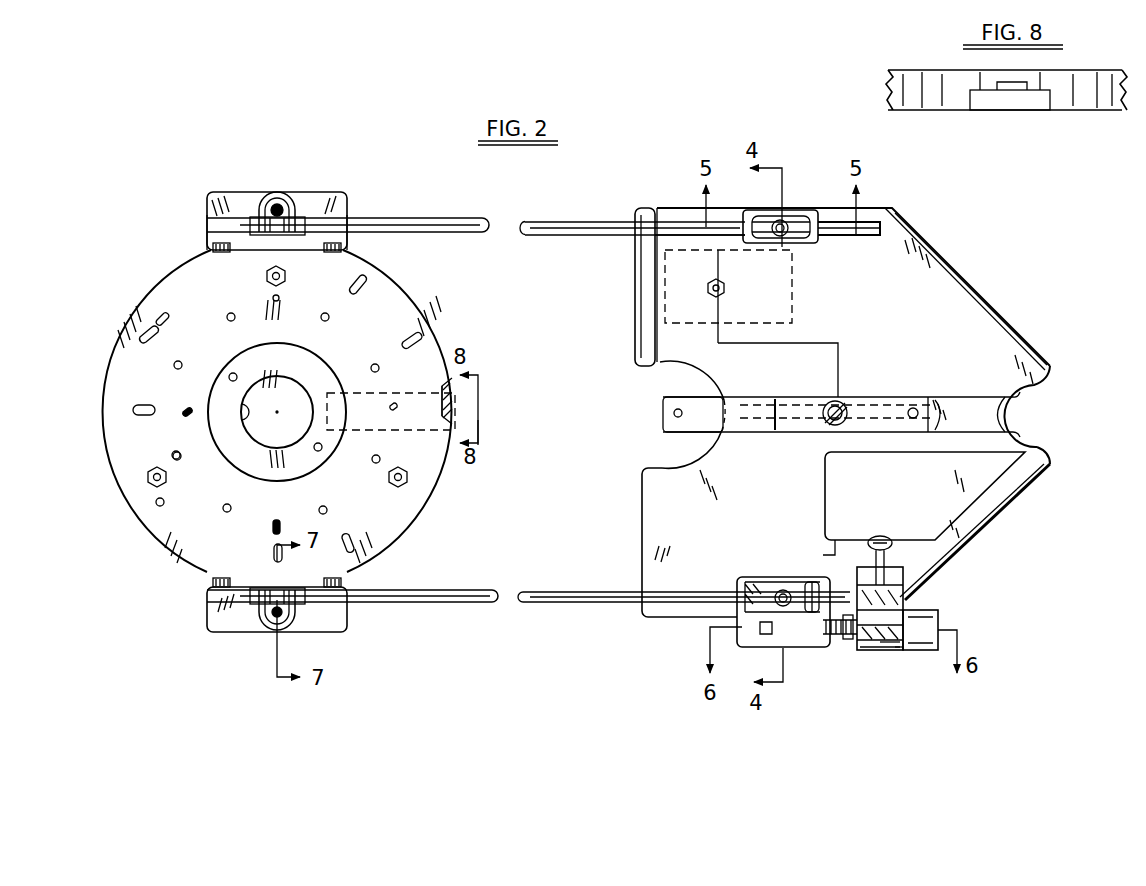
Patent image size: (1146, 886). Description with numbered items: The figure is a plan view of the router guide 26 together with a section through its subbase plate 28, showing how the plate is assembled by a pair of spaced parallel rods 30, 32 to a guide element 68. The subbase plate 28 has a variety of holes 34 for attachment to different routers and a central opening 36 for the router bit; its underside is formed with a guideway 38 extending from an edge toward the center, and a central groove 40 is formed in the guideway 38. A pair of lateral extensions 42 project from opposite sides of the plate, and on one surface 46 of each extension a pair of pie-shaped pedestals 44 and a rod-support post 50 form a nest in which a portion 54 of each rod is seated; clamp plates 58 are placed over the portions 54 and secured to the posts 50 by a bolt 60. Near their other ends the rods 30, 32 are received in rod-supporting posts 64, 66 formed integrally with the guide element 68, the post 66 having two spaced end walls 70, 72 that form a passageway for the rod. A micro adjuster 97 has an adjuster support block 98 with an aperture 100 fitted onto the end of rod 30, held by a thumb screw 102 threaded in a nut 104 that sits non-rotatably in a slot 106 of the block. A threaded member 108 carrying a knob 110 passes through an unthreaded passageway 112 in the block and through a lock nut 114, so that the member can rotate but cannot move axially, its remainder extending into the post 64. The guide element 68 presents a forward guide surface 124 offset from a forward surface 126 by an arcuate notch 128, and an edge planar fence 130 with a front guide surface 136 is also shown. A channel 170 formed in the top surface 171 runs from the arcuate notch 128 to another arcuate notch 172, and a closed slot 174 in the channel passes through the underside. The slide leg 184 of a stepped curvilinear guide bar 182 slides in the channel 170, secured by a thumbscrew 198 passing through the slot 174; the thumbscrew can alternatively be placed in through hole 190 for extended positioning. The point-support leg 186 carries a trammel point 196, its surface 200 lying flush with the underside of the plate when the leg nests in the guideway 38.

In FIG. 2, the router guide 26 is at (607, 651).
In FIG. 2, the subbase plate 28 is at (430, 503).
In FIG. 8, the subbase plate 28 is at (1083, 114).
In FIG. 2, the rod 30 is at (560, 604).
In FIG. 2, the rod 32 is at (582, 224).
In FIG. 2, the holes 34 is at (177, 456).
In FIG. 2, the central opening 36 is at (243, 412).
In FIG. 2, the guideway 38 is at (458, 425).
In FIG. 8, the guideway 38 is at (973, 104).
In FIG. 2, the central groove 40 is at (458, 410).
In FIG. 8, the central groove 40 is at (1004, 88).
In FIG. 2, the lateral extensions 42 is at (215, 207).
In FIG. 2, the pedestals 44 is at (213, 245).
In FIG. 2, the surface 46 is at (243, 203).
In FIG. 2, the rod-support post 50 is at (283, 196).
In FIG. 2, the portion 54 is at (325, 219).
In FIG. 2, the clamp plates 58 is at (297, 208).
In FIG. 2, the bolt 60 is at (273, 200).
In FIG. 2, the rod-supporting post 64 is at (766, 574).
In FIG. 2, the rod-supporting post 66 is at (805, 258).
In FIG. 2, the guide element 68 is at (997, 304).
In FIG. 2, the end wall 70 is at (775, 238).
In FIG. 2, the end wall 72 is at (822, 244).
In FIG. 2, the micro adjuster 97 is at (888, 658).
In FIG. 2, the adjuster support block 98 is at (862, 652).
In FIG. 2, the aperture 100 is at (906, 592).
In FIG. 2, the thumb screw 102 is at (886, 542).
In FIG. 2, the nut 104 is at (930, 582).
In FIG. 2, the slot 106 is at (856, 580).
In FIG. 2, the threaded member 108 is at (905, 654).
In FIG. 2, the knob 110 is at (920, 620).
In FIG. 2, the unthreaded passageway 112 is at (880, 642).
In FIG. 2, the lock nut 114 is at (857, 652).
In FIG. 2, the forward guide surface 124 is at (641, 540).
In FIG. 2, the forward surface 126 is at (645, 366).
In FIG. 2, the arcuate notch 128 is at (666, 466).
In FIG. 2, the edge planar fence 130 is at (645, 206).
In FIG. 2, the front guide surface 136 is at (634, 272).
In FIG. 2, the channel 170 is at (1022, 412).
In FIG. 2, the top surface 171 is at (945, 290).
In FIG. 2, the arcuate notch 172 is at (1047, 459).
In FIG. 2, the closed slot 174 is at (962, 398).
In FIG. 2, the stepped curvilinear guide bar 182 is at (775, 394).
In FIG. 2, the slide leg 184 is at (892, 400).
In FIG. 2, the point-support leg 186 is at (776, 437).
In FIG. 2, the through hole 190 is at (916, 402).
In FIG. 2, the trammel point 196 is at (674, 411).
In FIG. 2, the thumbscrew 198 is at (855, 398).
In FIG. 2, the surface 200 is at (742, 400).